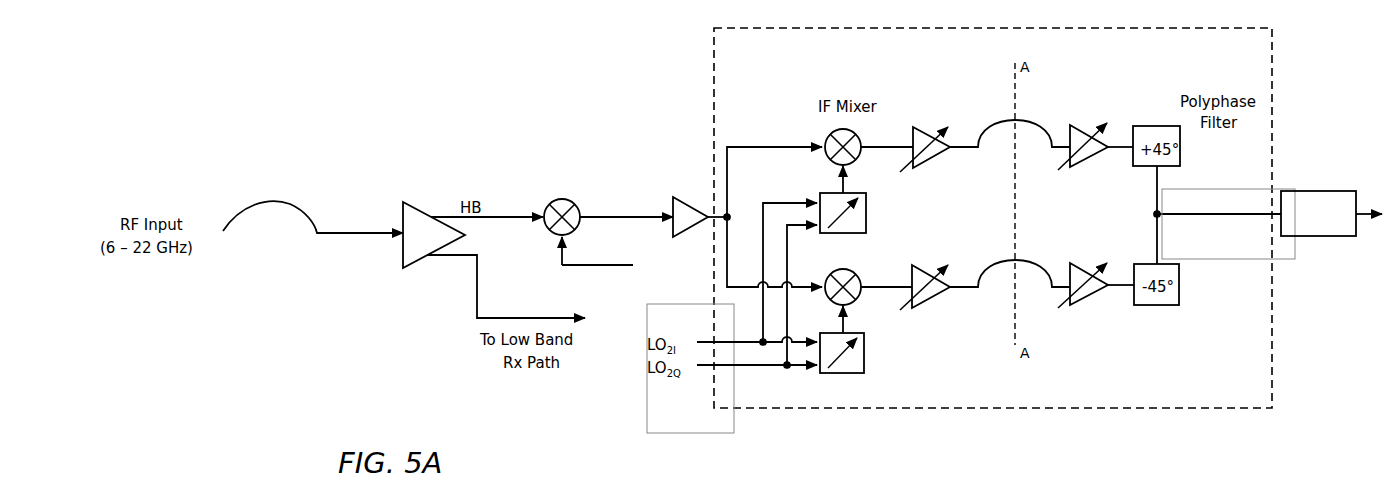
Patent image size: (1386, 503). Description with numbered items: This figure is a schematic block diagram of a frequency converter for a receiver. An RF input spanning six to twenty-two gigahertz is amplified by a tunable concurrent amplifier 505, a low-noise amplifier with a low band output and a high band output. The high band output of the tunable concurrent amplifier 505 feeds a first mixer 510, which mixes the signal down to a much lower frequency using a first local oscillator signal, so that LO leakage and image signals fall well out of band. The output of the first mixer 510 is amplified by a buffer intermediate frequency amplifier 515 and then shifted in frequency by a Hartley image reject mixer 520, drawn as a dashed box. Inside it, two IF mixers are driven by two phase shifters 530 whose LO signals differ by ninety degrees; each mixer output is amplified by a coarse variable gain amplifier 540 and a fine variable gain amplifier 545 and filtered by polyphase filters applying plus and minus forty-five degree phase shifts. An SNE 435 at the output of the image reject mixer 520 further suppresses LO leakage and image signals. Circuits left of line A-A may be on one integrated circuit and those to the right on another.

The tunable concurrent amplifier 505 is at (417, 264).
The first mixer 510 is at (550, 235).
The buffer intermediate frequency amplifier 515 is at (690, 237).
The image reject mixer 520 is at (713, 67).
The phase shifter 530 is at (866, 212).
The coarse variable gain amplifier 540 is at (942, 155).
The fine variable gain amplifier 545 is at (1088, 163).
The SNE 435 is at (1318, 237).